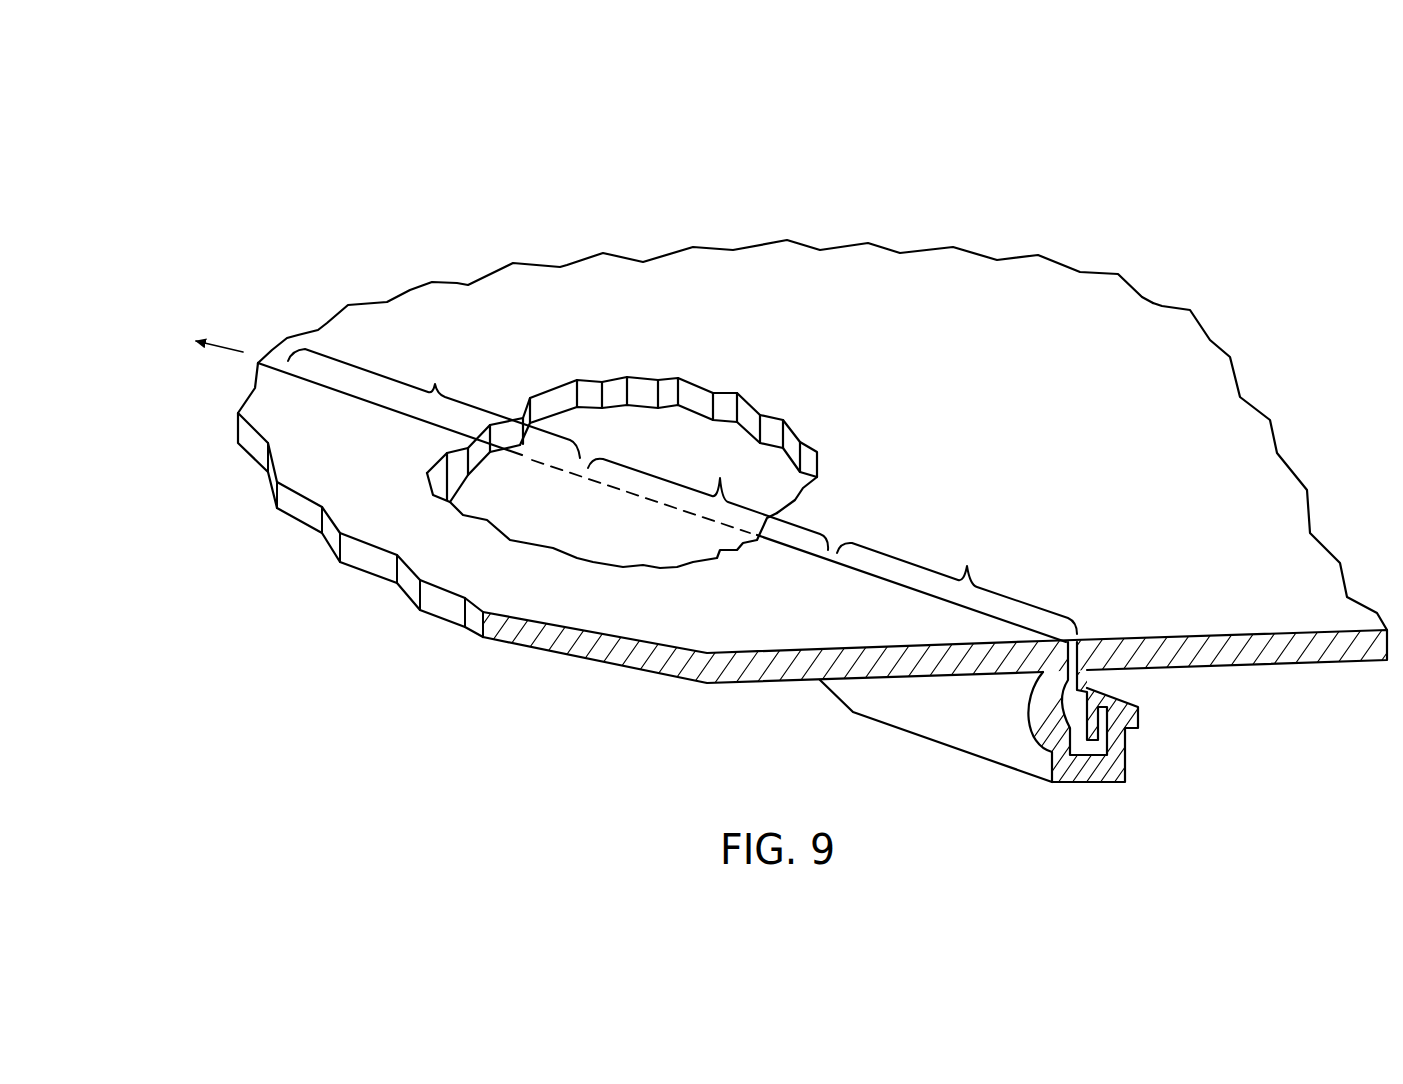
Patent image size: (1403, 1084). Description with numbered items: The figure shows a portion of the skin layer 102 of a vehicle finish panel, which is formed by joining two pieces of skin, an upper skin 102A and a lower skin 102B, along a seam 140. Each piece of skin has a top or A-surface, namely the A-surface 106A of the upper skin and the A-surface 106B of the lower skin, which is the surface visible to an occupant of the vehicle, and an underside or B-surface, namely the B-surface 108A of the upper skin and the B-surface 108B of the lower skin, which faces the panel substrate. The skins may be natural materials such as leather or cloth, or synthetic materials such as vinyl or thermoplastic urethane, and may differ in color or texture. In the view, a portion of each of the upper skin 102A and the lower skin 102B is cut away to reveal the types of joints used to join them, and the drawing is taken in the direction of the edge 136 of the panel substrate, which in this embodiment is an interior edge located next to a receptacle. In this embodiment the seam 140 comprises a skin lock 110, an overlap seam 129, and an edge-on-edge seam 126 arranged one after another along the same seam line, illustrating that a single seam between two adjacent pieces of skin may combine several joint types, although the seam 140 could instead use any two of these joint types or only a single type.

The skin layer 102 is at (740, 476).
The upper skin 102A is at (822, 410).
The lower skin 102B is at (280, 500).
The A-surface of the upper skin 106A is at (1155, 315).
The A-surface of the lower skin 106B is at (385, 538).
The B-surface of the upper skin 108A is at (1356, 664).
The B-surface of the lower skin 108B is at (640, 680).
The skin lock 110 is at (957, 582).
The edge-on-edge seam 126 is at (434, 403).
The overlap seam 129 is at (708, 497).
The edge 136 is at (177, 325).
The seam 140 is at (662, 502).